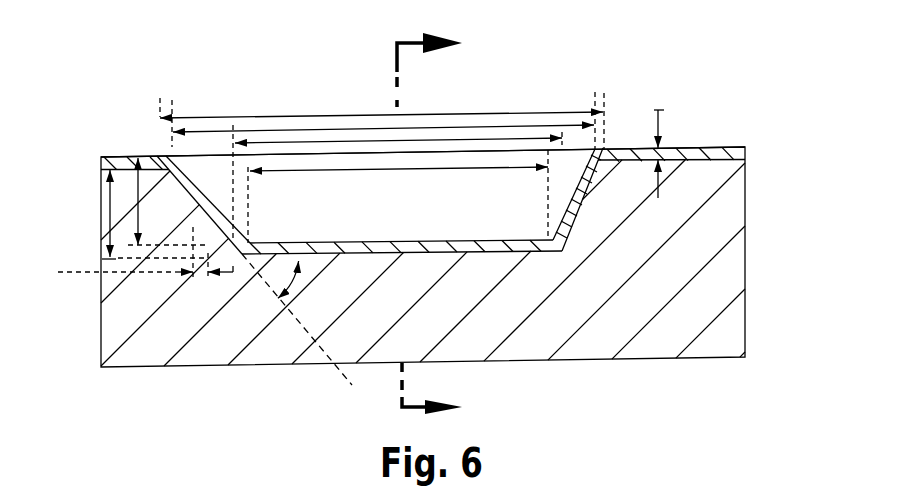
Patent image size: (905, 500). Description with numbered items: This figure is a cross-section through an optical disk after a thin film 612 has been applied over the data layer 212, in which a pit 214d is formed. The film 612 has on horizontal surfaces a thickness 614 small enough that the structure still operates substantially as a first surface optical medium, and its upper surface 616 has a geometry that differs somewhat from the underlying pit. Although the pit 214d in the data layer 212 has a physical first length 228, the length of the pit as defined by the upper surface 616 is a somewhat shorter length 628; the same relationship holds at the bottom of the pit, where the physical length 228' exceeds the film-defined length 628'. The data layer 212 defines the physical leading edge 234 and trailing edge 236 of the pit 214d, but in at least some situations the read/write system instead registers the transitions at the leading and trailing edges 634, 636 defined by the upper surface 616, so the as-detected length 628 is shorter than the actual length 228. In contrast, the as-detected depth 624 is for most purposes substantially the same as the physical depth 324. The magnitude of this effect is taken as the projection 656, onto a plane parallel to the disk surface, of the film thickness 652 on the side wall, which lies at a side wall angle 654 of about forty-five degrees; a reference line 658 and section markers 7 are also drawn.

The data layer 212 is at (712, 314).
The pit 214d is at (183, 178).
The film thickness on the side wall 652 is at (207, 191).
The leading edge defined by the film upper surface 634 is at (590, 152).
The leading edge of the pit 234 is at (603, 158).
The trailing edge of the pit 236 is at (143, 163).
The trailing edge defined by the film upper surface 636 is at (162, 150).
The upper surface of the thin film 616 is at (723, 148).
The thin film 612 is at (745, 158).
The film thickness 614 is at (660, 112).
The first length of the pit 228 is at (381, 86).
The as-detected length 628 is at (383, 93).
The pit length at the bottom of the feature 228' is at (397, 182).
The as-detected pit length at the bottom of the feature 628' is at (398, 196).
The physical z-dimension of the feature 324 is at (103, 257).
The as-detected z-dimension magnitude of the feature 624 is at (138, 246).
The projection of the film thickness 656 is at (233, 273).
The reference plane 658 is at (88, 293).
The side wall angle 654 is at (303, 283).
The section line 7- 7 is at (443, 214).